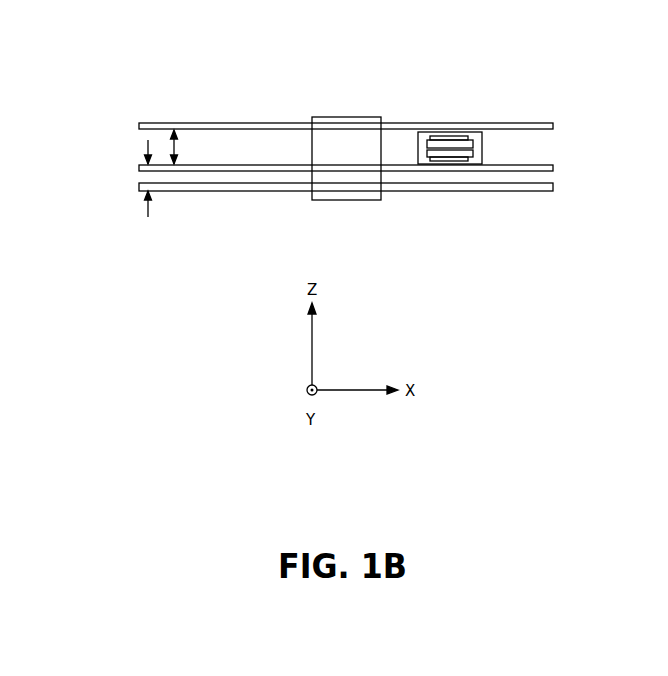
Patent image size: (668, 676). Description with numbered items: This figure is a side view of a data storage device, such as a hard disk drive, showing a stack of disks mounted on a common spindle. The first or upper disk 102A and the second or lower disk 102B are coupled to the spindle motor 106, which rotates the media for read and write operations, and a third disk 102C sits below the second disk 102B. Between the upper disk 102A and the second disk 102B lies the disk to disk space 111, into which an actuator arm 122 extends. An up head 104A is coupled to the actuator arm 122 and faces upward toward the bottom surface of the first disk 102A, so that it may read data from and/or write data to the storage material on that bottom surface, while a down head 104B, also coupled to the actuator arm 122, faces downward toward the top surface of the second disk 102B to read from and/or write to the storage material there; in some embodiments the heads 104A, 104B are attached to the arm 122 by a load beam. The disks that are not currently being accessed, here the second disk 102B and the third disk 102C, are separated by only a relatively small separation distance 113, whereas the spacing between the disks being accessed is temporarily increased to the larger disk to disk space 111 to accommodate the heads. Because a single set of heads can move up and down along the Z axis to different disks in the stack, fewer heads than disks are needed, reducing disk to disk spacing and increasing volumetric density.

The first disk 102A is at (547, 123).
The second disk 102B is at (509, 171).
The third disk 102C is at (539, 191).
The up head 104A is at (440, 134).
The down head 104B is at (443, 160).
The spindle motor 106 is at (321, 117).
The disk to disk space 111 is at (175, 146).
The separation distance 113 is at (145, 177).
The actuator arm 122 is at (481, 147).